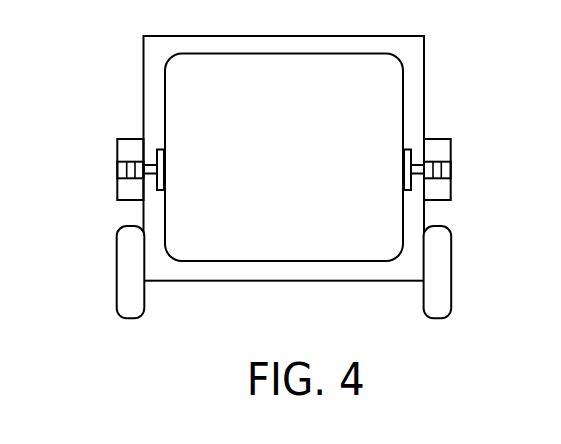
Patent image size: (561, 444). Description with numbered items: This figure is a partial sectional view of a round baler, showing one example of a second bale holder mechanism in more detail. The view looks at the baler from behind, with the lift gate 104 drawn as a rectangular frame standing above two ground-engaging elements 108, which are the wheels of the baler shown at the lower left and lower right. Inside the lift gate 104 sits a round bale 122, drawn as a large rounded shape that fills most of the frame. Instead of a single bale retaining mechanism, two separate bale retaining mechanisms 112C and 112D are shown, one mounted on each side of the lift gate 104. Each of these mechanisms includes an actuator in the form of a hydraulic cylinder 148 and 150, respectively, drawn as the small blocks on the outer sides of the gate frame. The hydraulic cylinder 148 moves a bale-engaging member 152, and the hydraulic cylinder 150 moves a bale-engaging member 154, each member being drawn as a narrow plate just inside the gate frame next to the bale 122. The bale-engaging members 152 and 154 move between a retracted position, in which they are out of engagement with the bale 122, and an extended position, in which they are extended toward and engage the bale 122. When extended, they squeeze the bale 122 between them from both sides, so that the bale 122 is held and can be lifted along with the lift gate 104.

The lift gate 104 is at (143, 70).
The ground-engaging elements 108 is at (117, 292).
The bale retaining mechanism 112C is at (132, 139).
The bale retaining mechanism 112D is at (436, 138).
The bale 122 is at (298, 166).
The hydraulic cylinder 148 is at (118, 162).
The hydraulic cylinder 150 is at (451, 179).
The bale-engaging member 152 is at (162, 150).
The bale-engaging member 154 is at (405, 191).